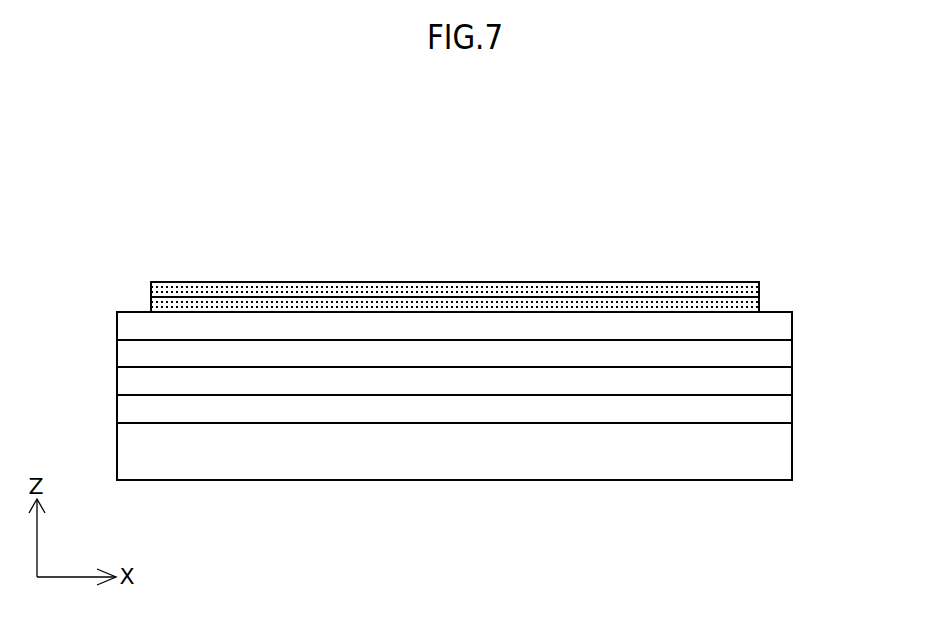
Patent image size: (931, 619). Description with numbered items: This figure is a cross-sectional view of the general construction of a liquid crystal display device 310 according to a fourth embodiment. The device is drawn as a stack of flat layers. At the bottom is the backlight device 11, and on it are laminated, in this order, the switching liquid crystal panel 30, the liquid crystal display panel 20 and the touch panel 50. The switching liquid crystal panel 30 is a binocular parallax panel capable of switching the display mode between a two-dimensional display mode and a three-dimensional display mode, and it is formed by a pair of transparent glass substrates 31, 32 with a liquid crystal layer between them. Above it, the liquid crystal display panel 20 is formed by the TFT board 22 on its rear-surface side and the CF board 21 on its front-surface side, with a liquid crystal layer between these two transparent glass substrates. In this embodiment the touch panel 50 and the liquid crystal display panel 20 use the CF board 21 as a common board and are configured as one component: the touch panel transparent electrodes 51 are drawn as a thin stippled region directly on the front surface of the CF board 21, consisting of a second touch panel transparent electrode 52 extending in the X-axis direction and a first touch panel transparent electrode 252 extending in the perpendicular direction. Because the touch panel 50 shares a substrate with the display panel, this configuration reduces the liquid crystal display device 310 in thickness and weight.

The backlight device 11 is at (778, 455).
The liquid crystal display panel 20 is at (856, 300).
The CF board 21 is at (778, 327).
The TFT board 22 is at (782, 360).
The switching liquid crystal panel 30 is at (856, 377).
The glass substrate 31 is at (784, 415).
The glass substrate 32 is at (780, 383).
The touch panel 50 is at (777, 297).
The touch panel transparent electrode 51 is at (455, 237).
The second touch panel transparent electrode 52 is at (415, 291).
The first touch panel transparent electrode 252 is at (538, 306).
The liquid crystal display device 310 is at (609, 488).